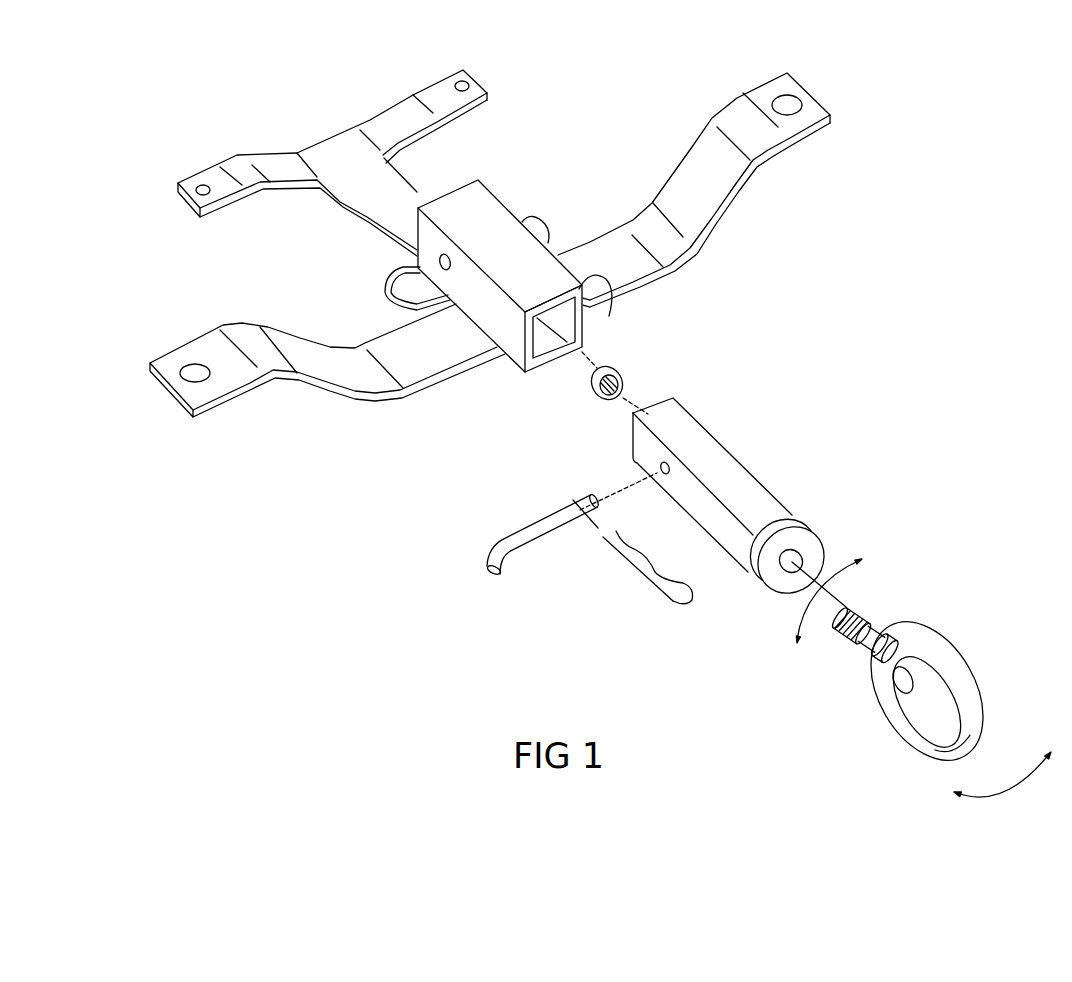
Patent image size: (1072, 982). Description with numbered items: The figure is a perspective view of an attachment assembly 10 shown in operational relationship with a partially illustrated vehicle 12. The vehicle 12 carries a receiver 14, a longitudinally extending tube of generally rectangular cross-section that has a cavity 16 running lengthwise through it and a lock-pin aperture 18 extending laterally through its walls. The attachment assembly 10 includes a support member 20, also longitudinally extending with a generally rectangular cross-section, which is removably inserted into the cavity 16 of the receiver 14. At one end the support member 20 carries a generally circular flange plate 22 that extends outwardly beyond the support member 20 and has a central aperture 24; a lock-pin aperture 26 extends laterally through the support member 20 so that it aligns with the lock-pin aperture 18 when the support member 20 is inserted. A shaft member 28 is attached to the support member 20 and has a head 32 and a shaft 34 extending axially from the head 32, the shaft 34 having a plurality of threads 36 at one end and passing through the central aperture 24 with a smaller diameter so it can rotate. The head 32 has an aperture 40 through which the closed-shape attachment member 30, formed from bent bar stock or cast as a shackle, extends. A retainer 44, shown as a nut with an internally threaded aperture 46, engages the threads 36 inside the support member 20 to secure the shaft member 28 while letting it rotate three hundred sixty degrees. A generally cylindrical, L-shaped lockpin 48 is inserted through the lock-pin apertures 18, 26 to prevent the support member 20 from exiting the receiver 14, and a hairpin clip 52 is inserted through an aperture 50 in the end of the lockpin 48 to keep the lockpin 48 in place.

The attachment assembly 10 is at (912, 485).
The vehicle 12 is at (408, 193).
The receiver 14 is at (510, 276).
The cavity 16 is at (580, 327).
The lock-pin aperture 18 is at (438, 257).
The support member 20 is at (723, 517).
The flange plate 22 is at (812, 542).
The central aperture 24 is at (791, 562).
The lock-pin aperture 26 is at (660, 469).
The shaft member 28 is at (904, 677).
The attachment member 30 is at (967, 692).
The head 32 is at (882, 665).
The shaft 34 is at (847, 638).
The threads 36 is at (843, 604).
The aperture 40 is at (937, 632).
The retainer 44 is at (639, 382).
The aperture 46 is at (622, 374).
The lockpin 48 is at (543, 523).
The aperture 50 is at (578, 495).
The hairpin clip 52 is at (673, 607).